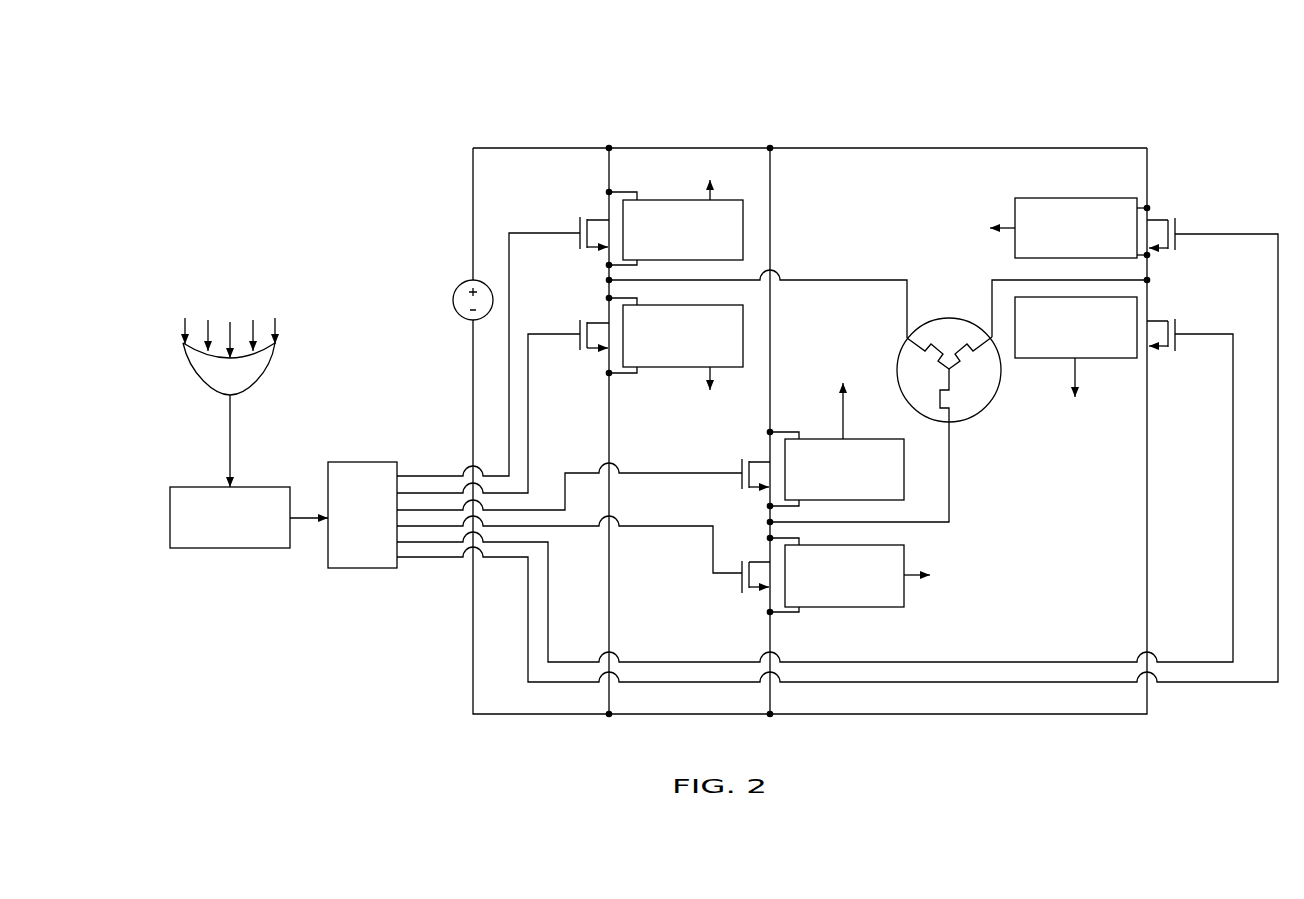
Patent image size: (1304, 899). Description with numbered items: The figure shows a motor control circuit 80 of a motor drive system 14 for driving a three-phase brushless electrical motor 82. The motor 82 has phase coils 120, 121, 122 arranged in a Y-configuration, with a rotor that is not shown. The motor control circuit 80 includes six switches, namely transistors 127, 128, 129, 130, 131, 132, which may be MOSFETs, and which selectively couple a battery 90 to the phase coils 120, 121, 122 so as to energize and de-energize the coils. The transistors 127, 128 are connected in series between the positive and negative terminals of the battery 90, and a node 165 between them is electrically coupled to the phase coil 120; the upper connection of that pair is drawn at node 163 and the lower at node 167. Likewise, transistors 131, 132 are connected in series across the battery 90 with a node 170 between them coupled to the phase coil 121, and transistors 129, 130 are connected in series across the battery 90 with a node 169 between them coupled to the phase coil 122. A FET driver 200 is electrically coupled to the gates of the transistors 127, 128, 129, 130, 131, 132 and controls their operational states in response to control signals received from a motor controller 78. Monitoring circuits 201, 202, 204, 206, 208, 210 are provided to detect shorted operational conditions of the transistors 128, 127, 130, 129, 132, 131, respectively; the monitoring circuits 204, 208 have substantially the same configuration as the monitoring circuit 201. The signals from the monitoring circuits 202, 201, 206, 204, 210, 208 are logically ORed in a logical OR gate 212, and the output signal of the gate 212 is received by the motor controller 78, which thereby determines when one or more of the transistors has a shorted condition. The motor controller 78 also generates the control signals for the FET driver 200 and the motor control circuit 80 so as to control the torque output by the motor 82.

The motor drive system 14 is at (905, 97).
The motor control circuit 80 is at (1040, 148).
The battery 90 is at (478, 280).
The transistor 127 is at (597, 219).
The transistor 128 is at (591, 350).
The transistor 129 is at (757, 460).
The transistor 130 is at (755, 589).
The transistor 131 is at (1158, 220).
The transistor 132 is at (1160, 350).
The first node 163 is at (612, 192).
The node 165 is at (607, 279).
The low-side node 167 is at (611, 375).
The node 169 is at (768, 521).
The node 170 is at (1150, 280).
The monitoring circuit 201 is at (744, 232).
The monitoring circuit 202 is at (744, 336).
The monitoring circuit 204 is at (905, 480).
The monitoring circuit 206 is at (905, 603).
The monitoring circuit 208 is at (1062, 198).
The monitoring circuit 210 is at (1046, 359).
The motor 82 is at (946, 318).
The phase coil 120 is at (932, 349).
The phase coil 121 is at (970, 342).
The phase coil 122 is at (940, 402).
The motor controller 78 is at (182, 487).
The FET driver 200 is at (360, 462).
The logical OR gate 212 is at (267, 368).